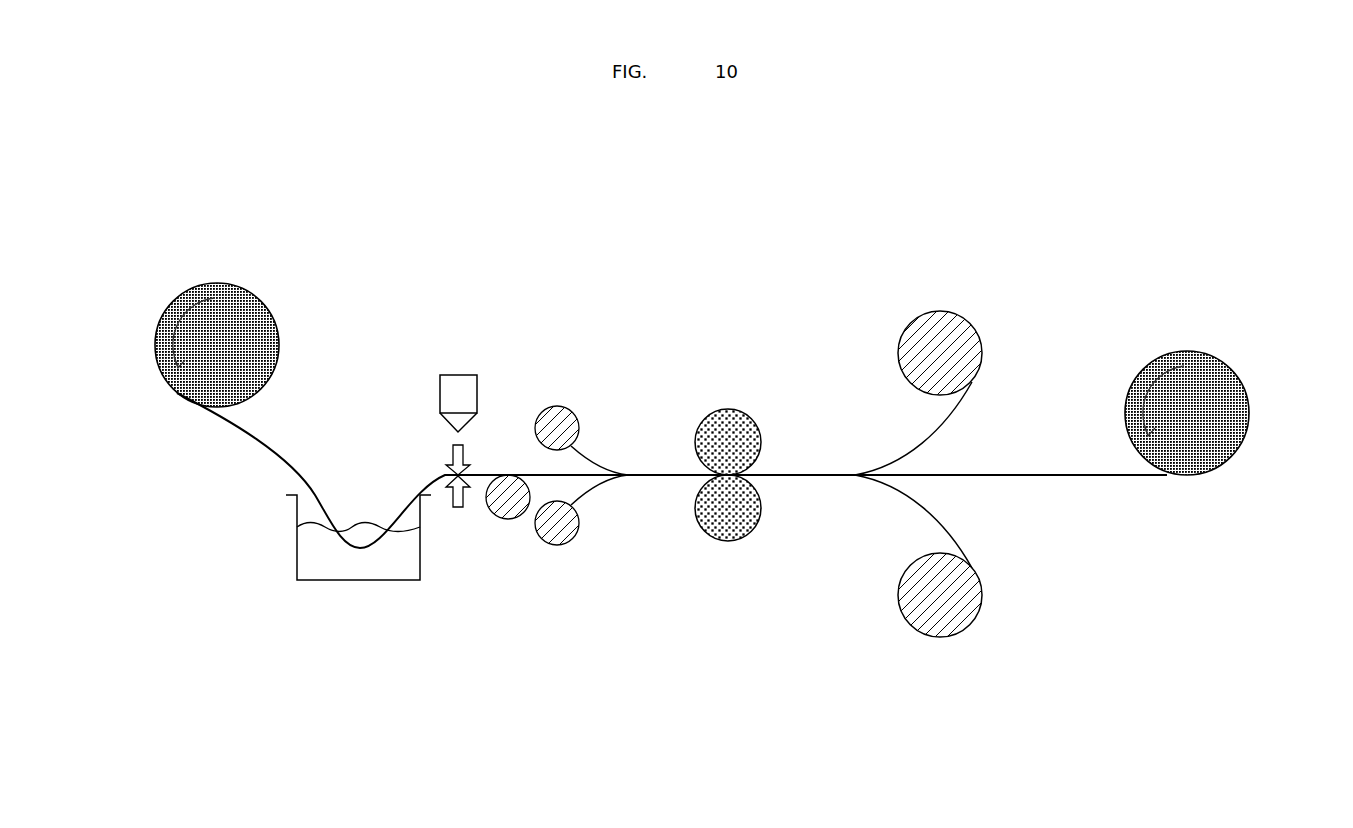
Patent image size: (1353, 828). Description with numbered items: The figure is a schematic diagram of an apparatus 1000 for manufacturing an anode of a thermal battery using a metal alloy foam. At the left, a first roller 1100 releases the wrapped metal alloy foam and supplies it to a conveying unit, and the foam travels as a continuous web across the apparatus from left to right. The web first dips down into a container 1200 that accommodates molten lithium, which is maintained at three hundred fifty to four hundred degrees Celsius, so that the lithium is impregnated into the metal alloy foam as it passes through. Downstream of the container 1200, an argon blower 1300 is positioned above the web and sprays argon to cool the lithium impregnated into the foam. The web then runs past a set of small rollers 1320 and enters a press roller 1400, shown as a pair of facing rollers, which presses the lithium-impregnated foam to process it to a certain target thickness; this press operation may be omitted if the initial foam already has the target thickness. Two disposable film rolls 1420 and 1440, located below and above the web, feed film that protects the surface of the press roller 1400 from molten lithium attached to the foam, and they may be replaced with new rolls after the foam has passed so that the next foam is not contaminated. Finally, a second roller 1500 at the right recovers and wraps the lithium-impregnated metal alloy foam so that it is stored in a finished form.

The apparatus for manufacturing an anode of a thermal battery 1000 is at (1103, 227).
The first roller 1100 is at (218, 283).
The container 1200 is at (410, 551).
The argon blower 1300 is at (459, 374).
The guide rollers 1320 is at (557, 406).
The press roller 1400 is at (728, 409).
The film roll 1420 is at (940, 637).
The film roll 1440 is at (940, 311).
The second roller 1500 is at (1187, 351).